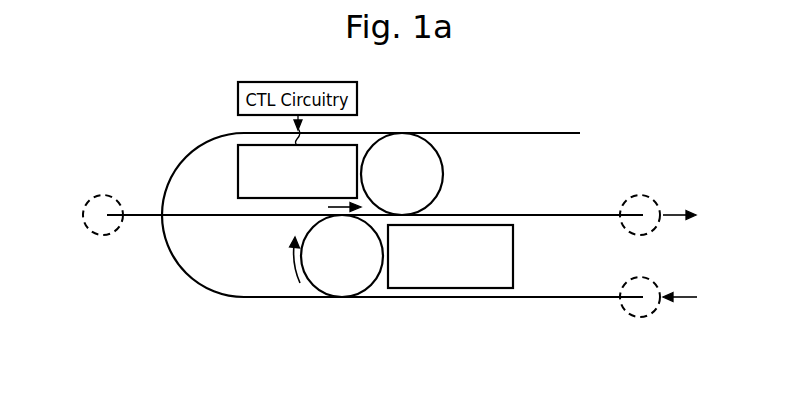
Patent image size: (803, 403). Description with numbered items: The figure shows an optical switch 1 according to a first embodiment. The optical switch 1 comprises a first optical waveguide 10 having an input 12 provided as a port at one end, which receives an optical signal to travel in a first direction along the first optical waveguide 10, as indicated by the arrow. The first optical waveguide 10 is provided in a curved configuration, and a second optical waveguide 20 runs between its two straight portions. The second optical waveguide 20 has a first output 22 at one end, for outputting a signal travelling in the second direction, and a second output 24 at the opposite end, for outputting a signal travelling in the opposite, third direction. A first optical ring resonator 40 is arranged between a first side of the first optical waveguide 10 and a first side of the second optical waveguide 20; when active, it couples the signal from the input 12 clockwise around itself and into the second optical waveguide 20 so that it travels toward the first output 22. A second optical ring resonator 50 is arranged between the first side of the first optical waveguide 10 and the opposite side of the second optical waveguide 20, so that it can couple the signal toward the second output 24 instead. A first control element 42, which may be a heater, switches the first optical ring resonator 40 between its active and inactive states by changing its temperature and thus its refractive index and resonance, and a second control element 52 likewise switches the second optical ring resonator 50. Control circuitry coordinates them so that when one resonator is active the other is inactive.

The optical switch 1 is at (501, 342).
The first optical waveguide 10 is at (173, 256).
The input 12 is at (643, 318).
The second optical waveguide 20 is at (478, 213).
The first output 22 is at (653, 198).
The second output 24 is at (102, 235).
The first optical ring resonator 40 is at (311, 291).
The first control element 42 is at (513, 270).
The second optical ring resonator 50 is at (443, 156).
The second control element 52 is at (238, 183).